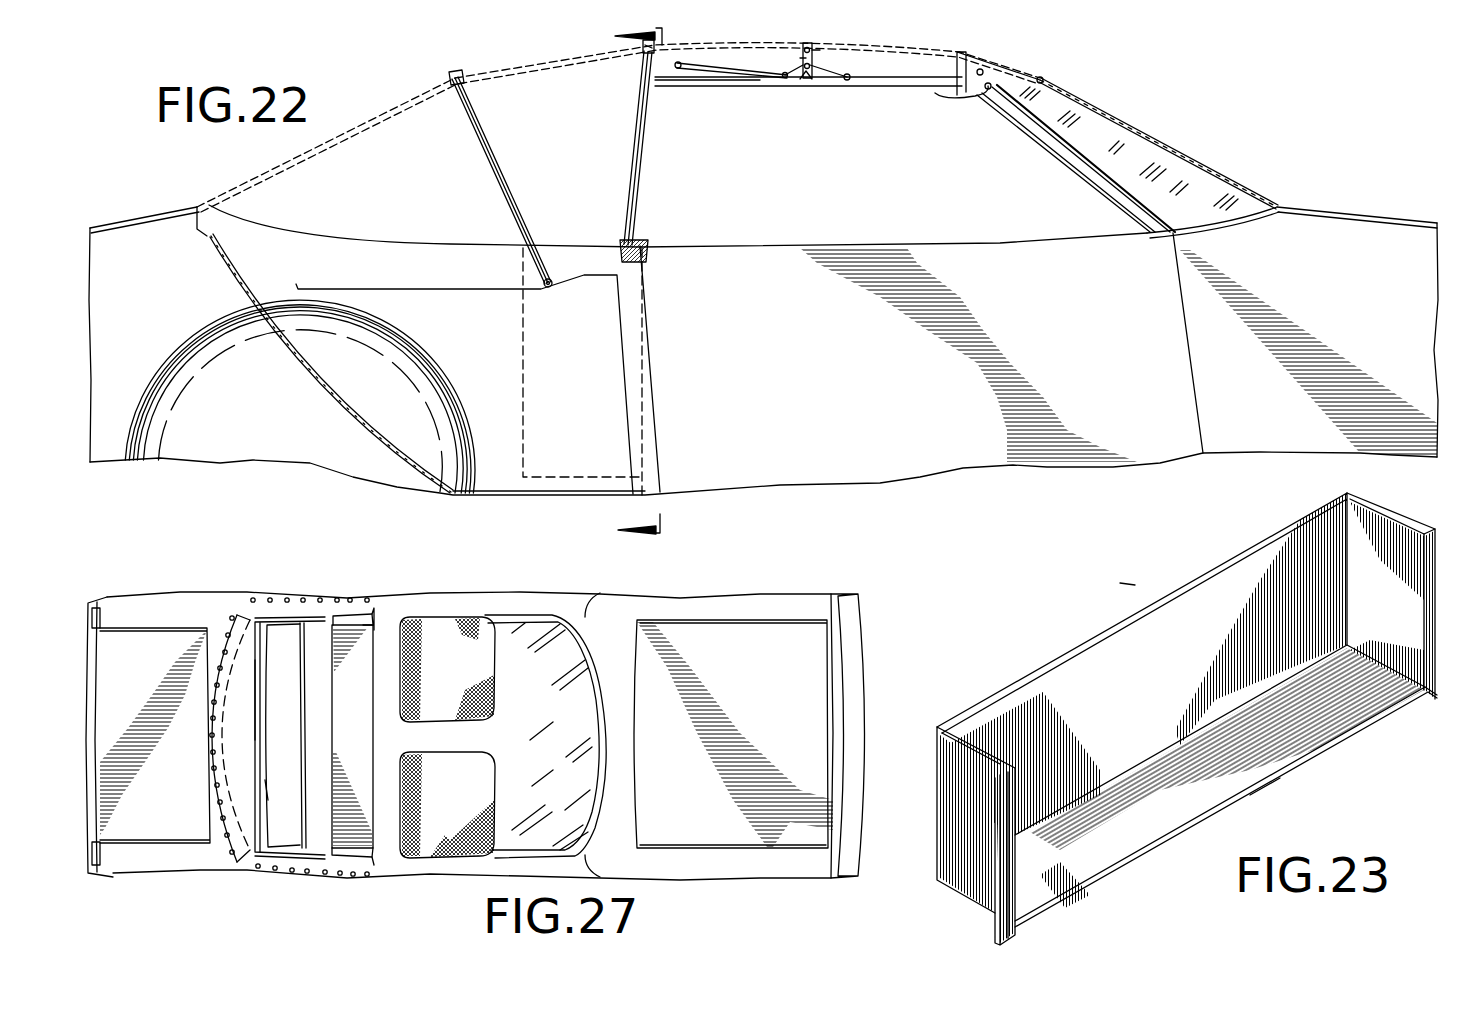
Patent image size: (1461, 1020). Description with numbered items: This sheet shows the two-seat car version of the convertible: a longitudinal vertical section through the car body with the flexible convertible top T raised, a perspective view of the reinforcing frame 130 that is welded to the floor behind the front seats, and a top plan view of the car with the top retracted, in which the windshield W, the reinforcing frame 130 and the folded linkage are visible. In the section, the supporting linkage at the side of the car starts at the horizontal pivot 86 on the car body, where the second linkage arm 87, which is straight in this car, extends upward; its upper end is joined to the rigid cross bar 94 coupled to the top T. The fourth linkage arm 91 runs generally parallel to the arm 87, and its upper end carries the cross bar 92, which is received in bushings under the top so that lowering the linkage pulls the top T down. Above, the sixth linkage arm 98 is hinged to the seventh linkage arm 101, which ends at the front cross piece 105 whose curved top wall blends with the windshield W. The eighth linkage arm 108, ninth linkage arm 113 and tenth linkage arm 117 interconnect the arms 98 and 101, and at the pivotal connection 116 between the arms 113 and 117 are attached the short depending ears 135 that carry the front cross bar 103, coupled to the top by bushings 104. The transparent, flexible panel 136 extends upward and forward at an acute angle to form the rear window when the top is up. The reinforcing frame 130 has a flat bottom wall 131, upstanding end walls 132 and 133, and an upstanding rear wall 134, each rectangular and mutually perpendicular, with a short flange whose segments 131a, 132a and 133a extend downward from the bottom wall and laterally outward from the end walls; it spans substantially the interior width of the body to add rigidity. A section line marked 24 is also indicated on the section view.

In FIG. 22, the flexible convertible top T is at (547, 58).
In FIG. 22, the section line 24 is at (659, 280).
In FIG. 22, the pivot 86 is at (550, 289).
In FIG. 22, the second rigid linkage arm 87 is at (493, 154).
In FIG. 22, the fourth linkage arm 91 is at (636, 152).
In FIG. 22, the cross bar 92 is at (648, 54).
In FIG. 27, the cross bar 92 is at (268, 785).
In FIG. 22, the rigid cross bar 94 is at (452, 78).
In FIG. 27, the rigid cross bar 94 is at (255, 700).
In FIG. 22, the sixth linkage arm 98 is at (687, 87).
In FIG. 22, the seventh linkage arm 101 is at (898, 88).
In FIG. 22, the cross bar 103 is at (813, 45).
In FIG. 27, the cross bar 103 is at (301, 713).
In FIG. 22, the bushings 104 is at (817, 50).
In FIG. 22, the front cross piece 105 is at (998, 66).
In FIG. 22, the eighth linkage arm 108 is at (720, 70).
In FIG. 22, the ninth linkage arm 113 is at (795, 70).
In FIG. 22, the pivotal connection 116 is at (813, 80).
In FIG. 22, the tenth linkage arm 117 is at (830, 72).
In FIG. 22, the reinforcing frame 130 is at (522, 377).
In FIG. 27, the reinforcing frame 130 is at (400, 739).
In FIG. 23, the reinforcing frame 130 is at (1125, 585).
In FIG. 27, the flat bottom wall 131 is at (338, 711).
In FIG. 23, the flat bottom wall 131 is at (1077, 868).
In FIG. 23, the flange segment 131a is at (1289, 776).
In FIG. 27, the end wall 132 is at (348, 860).
In FIG. 23, the end wall 132 is at (948, 860).
In FIG. 27, the flange segment 132a is at (376, 860).
In FIG. 23, the flange segment 132a is at (1006, 877).
In FIG. 27, the end wall 133 is at (346, 614).
In FIG. 23, the end wall 133 is at (1376, 514).
In FIG. 27, the flange segment 133a is at (373, 609).
In FIG. 23, the flange segment 133a is at (1422, 581).
In FIG. 27, the rear wall 134 is at (327, 673).
In FIG. 23, the rear wall 134 is at (1017, 690).
In FIG. 22, the depending ears 135 is at (800, 58).
In FIG. 27, the flexible and resilient panel 136 is at (237, 742).
In FIG. 22, the windshield W is at (1133, 127).
In FIG. 27, the windshield W is at (592, 738).